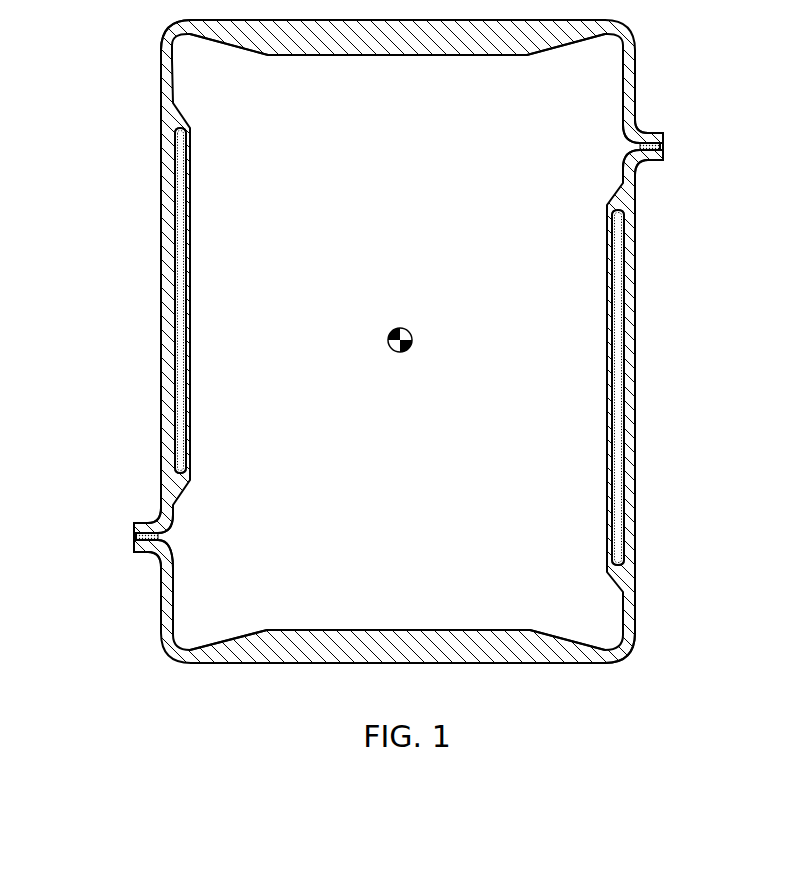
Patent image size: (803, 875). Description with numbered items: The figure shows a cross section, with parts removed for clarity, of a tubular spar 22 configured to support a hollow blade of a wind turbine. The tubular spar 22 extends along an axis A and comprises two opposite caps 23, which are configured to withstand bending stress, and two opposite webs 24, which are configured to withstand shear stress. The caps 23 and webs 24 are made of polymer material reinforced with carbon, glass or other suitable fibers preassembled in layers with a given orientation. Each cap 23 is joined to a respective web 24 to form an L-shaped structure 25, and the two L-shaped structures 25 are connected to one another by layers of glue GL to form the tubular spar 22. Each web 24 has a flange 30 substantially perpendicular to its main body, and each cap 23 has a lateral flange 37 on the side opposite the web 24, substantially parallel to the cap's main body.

The tubular spar 22 is at (122, 295).
The cap 23 is at (385, 64).
The web 24 is at (210, 291).
The L-shaped structure 25 is at (140, 113).
The flange 30 is at (660, 160).
The lateral flange 37 is at (654, 132).
The layers of glue GL is at (658, 147).
The axis A is at (410, 327).